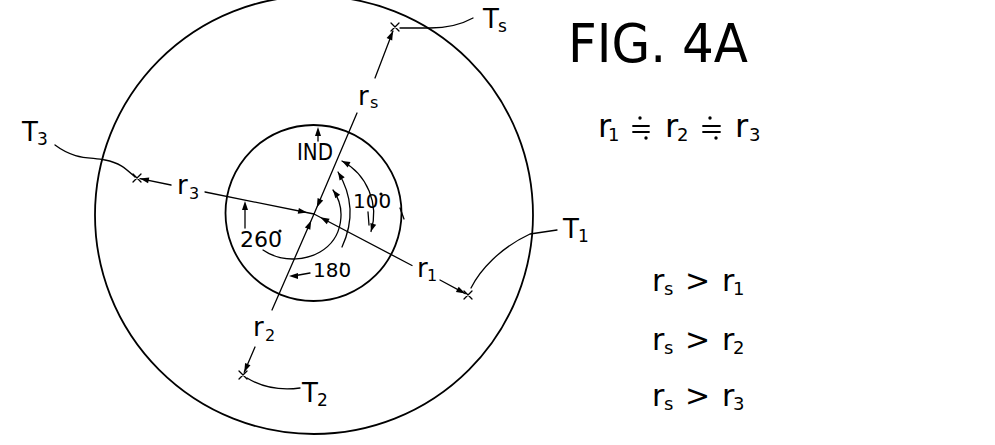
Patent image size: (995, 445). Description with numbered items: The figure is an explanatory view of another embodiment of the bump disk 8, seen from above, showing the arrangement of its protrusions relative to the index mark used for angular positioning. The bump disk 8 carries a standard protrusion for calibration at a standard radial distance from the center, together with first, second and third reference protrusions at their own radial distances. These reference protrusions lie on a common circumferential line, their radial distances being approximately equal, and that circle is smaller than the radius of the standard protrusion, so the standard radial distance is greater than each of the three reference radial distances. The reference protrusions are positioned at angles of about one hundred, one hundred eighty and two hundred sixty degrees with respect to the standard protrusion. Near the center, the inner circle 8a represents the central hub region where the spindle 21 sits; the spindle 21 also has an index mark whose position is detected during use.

The bump disk 8 is at (186, 46).
The inner circle (central region) 8a is at (376, 149).
The spindle 21 is at (392, 215).